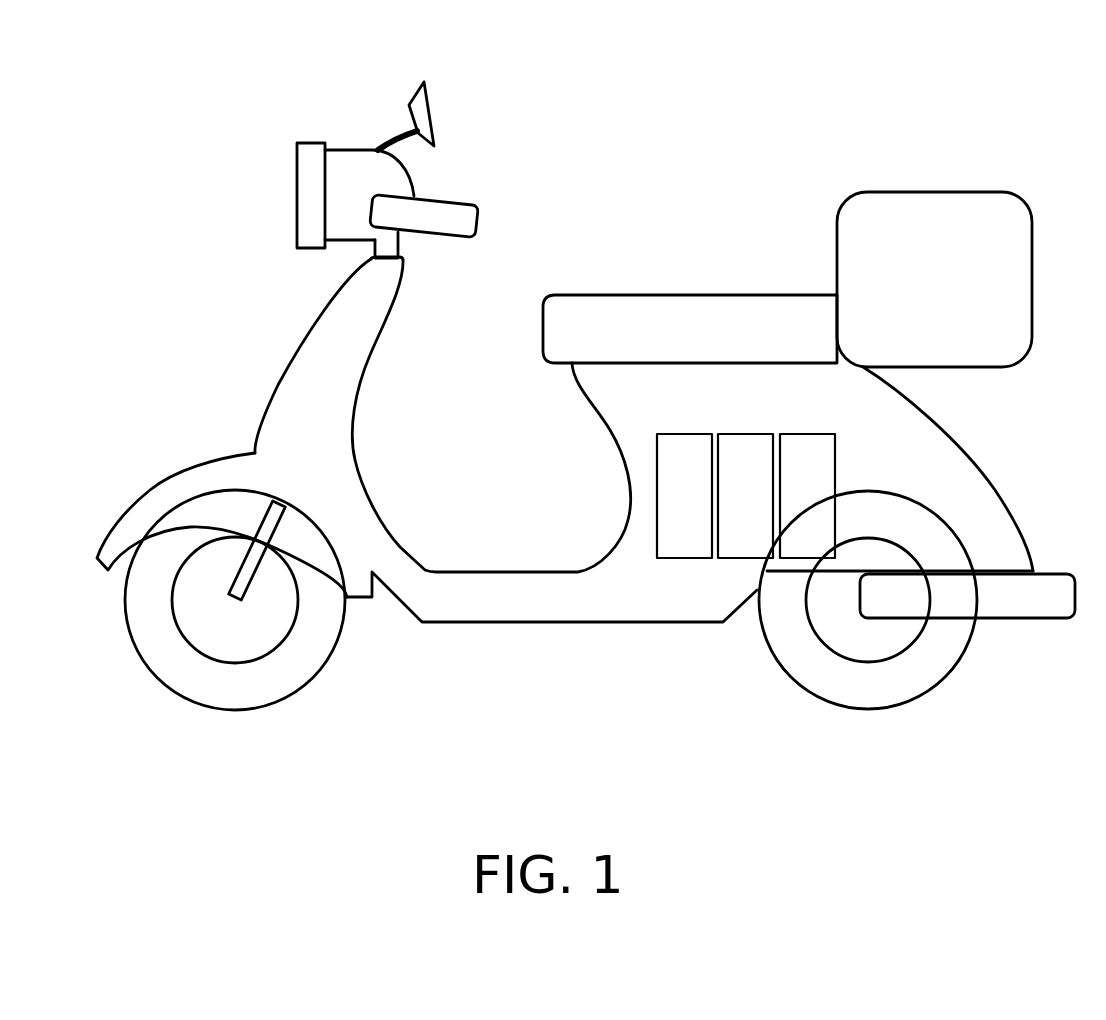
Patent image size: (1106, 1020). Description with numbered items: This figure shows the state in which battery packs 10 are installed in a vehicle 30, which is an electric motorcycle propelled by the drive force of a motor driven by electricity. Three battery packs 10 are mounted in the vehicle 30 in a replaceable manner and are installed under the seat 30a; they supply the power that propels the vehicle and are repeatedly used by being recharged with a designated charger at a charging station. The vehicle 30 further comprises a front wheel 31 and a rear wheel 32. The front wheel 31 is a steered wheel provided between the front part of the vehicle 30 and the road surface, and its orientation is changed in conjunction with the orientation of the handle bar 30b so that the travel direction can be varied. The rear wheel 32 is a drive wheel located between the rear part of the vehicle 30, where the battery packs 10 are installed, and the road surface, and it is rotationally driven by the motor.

The battery pack 10 is at (808, 453).
The vehicle 30 is at (273, 103).
The seat 30a is at (618, 313).
The handle bar 30b is at (453, 213).
The front wheel 31 is at (250, 682).
The rear wheel 32 is at (890, 687).